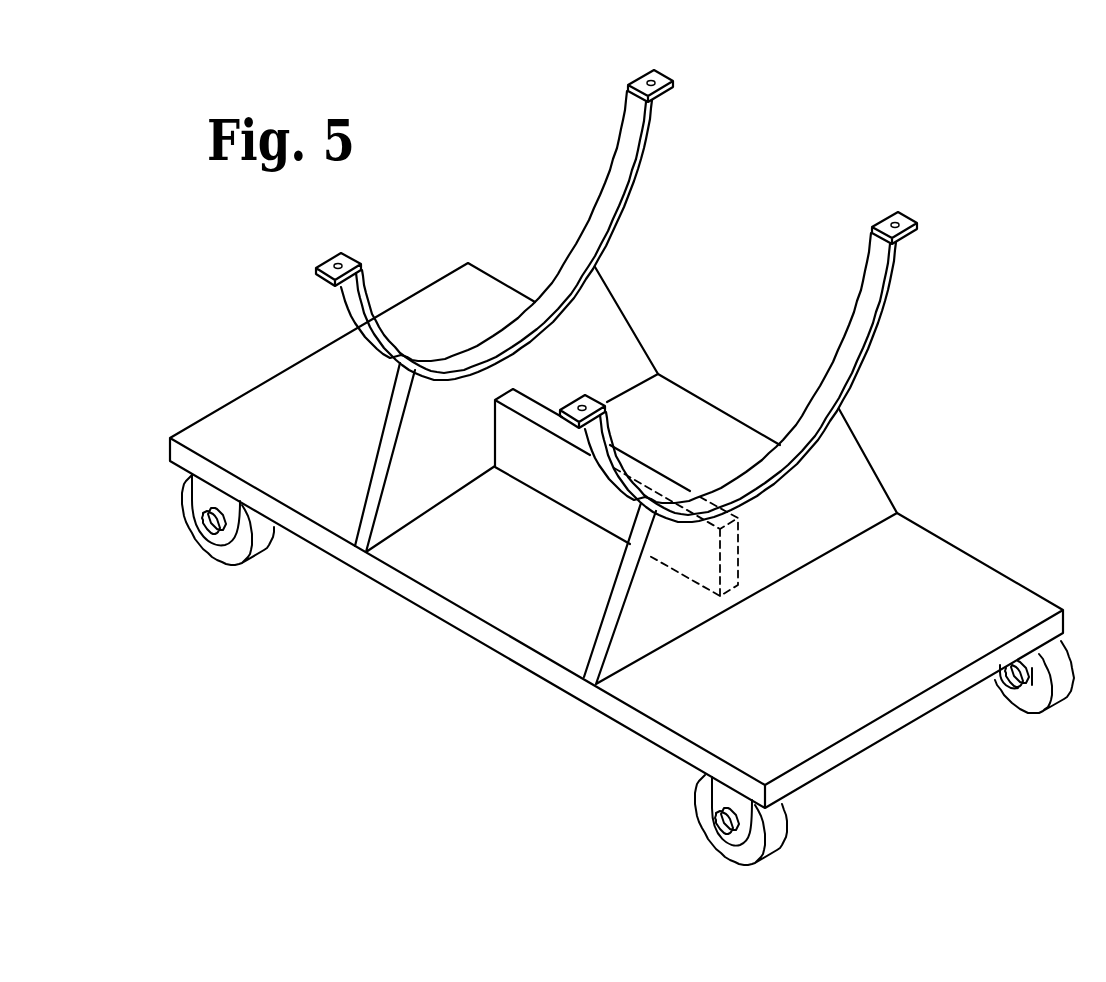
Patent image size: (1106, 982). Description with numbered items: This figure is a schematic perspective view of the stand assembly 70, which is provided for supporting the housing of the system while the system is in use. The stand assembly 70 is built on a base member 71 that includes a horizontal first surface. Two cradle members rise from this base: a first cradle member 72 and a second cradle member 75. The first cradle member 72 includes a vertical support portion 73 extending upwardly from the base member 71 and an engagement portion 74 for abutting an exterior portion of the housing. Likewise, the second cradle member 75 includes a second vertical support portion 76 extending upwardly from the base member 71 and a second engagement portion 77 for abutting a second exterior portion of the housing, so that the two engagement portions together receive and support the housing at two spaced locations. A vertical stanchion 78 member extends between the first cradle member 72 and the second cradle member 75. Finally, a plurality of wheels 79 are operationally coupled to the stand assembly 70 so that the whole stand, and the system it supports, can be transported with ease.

The stand assembly 70 is at (495, 742).
The base member 71 is at (915, 595).
The first cradle member 72 is at (888, 412).
The vertical support portion 73 is at (875, 468).
The engagement portion 74 is at (888, 300).
The second cradle member 75 is at (653, 273).
The second vertical support portion 76 is at (627, 323).
The second engagement portion 77 is at (645, 153).
The vertical stanchion member 78 is at (557, 472).
The wheels 79 is at (1025, 688).